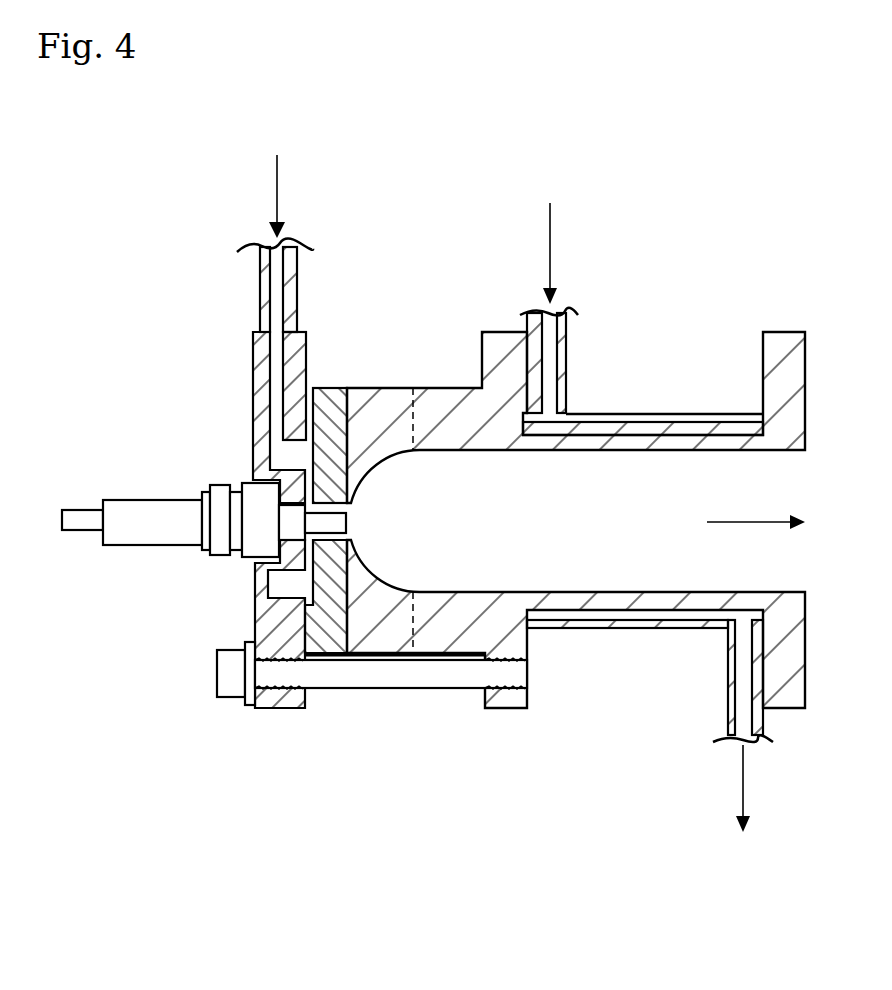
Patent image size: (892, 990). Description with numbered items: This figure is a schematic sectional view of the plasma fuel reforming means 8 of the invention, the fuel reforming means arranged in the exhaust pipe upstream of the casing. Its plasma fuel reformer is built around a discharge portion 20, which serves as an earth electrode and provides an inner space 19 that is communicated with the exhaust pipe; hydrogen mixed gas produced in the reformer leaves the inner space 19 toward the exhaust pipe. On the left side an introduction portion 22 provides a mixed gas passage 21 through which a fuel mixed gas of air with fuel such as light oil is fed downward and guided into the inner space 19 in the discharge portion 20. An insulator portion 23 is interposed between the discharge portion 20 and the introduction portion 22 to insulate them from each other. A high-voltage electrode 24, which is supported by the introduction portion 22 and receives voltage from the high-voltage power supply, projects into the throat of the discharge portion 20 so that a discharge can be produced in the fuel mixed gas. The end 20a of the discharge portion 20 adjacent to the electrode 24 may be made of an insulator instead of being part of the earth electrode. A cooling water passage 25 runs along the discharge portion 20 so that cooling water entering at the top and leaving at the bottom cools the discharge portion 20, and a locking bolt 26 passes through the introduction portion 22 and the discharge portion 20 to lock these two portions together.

The plasma fuel reforming means 8 is at (673, 214).
The inner space 19 is at (532, 553).
The discharge portion 20 is at (477, 622).
The end of the discharge portion 20a is at (383, 638).
The mixed gas passage 21 is at (277, 357).
The introduction portion 22 is at (263, 422).
The insulator portion 23 is at (330, 620).
The high-voltage electrode 24 is at (205, 547).
The cooling water passage 25 is at (640, 430).
The locking bolt 26 is at (232, 678).